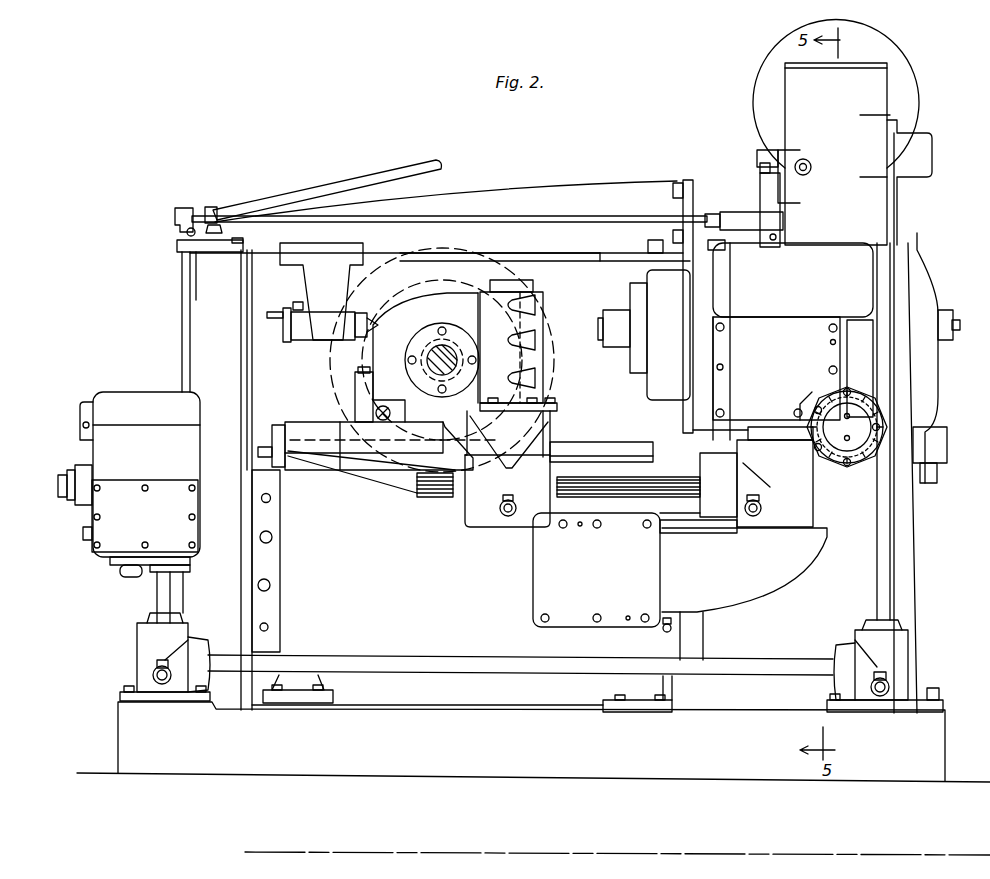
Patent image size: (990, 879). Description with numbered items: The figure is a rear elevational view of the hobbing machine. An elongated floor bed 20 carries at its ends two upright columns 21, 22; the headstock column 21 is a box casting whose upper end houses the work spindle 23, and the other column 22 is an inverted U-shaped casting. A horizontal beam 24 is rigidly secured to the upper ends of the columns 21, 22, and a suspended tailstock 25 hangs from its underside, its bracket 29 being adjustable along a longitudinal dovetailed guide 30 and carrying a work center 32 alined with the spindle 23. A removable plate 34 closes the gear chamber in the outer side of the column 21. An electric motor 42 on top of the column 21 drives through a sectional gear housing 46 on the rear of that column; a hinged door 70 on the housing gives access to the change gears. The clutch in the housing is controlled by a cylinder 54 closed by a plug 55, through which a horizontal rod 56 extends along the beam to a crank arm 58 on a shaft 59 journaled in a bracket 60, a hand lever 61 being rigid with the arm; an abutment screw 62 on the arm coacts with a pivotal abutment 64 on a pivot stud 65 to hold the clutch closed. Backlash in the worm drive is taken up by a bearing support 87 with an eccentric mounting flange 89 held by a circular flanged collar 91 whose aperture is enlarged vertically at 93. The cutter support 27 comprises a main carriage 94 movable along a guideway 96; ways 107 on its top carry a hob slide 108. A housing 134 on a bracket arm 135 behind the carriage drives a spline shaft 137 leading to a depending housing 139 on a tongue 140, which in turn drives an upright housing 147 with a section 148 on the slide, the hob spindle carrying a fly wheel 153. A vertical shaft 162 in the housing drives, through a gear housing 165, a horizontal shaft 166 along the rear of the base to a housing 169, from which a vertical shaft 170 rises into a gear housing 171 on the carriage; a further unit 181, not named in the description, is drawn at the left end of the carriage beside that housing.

The floor bed 20 is at (462, 728).
The headstock column 21 is at (908, 545).
The column 22 is at (228, 556).
The work spindle 23 is at (617, 343).
The horizontal beam 24 is at (563, 184).
The tailstock 25 is at (303, 300).
The cutter support 27 is at (590, 441).
The bracket 29 is at (326, 268).
The longitudinal dovetailed guide 30 is at (510, 253).
The work center 32 is at (372, 318).
The removable plate 34 is at (936, 296).
The electric motor 42 is at (762, 86).
The sectional gear housing 46 is at (868, 205).
The cylinder 54 is at (736, 212).
The plug 55 is at (710, 214).
The horizontal rod 56 is at (620, 218).
The crank arm 58 is at (176, 222).
The shaft 59 is at (185, 284).
The bracket 60 is at (178, 248).
The hand lever 61 is at (340, 187).
The abutment screw 62 is at (187, 233).
The pivotal abutment 64 is at (222, 230).
The pivot stud 65 is at (212, 210).
The hinged door 70 is at (860, 264).
The bearing support 87 is at (843, 434).
The eccentric mounting flange 89 is at (822, 394).
The circular flanged collar 91 is at (860, 462).
The enlarged aperture 93 is at (851, 410).
The main carriage 94 is at (417, 640).
The guideway 96 is at (248, 420).
The longitudinal ways 107 is at (640, 447).
The hob slide 108 is at (318, 423).
The housing 134 is at (803, 507).
The bracket arm 135 is at (782, 574).
The spline shaft 137 is at (635, 495).
The depending housing 139 is at (485, 520).
The tongue 140 is at (380, 462).
The upright housing 147 is at (528, 360).
The housing section 148 is at (447, 297).
The fly wheel 153 is at (548, 341).
The vertical shaft 162 is at (888, 573).
The gear housing 165 is at (857, 647).
The horizontal shaft 166 is at (508, 660).
The housing 169 is at (140, 650).
The vertical shaft 170 is at (157, 593).
The gear housing 171 is at (108, 444).
The motor 181 is at (150, 398).